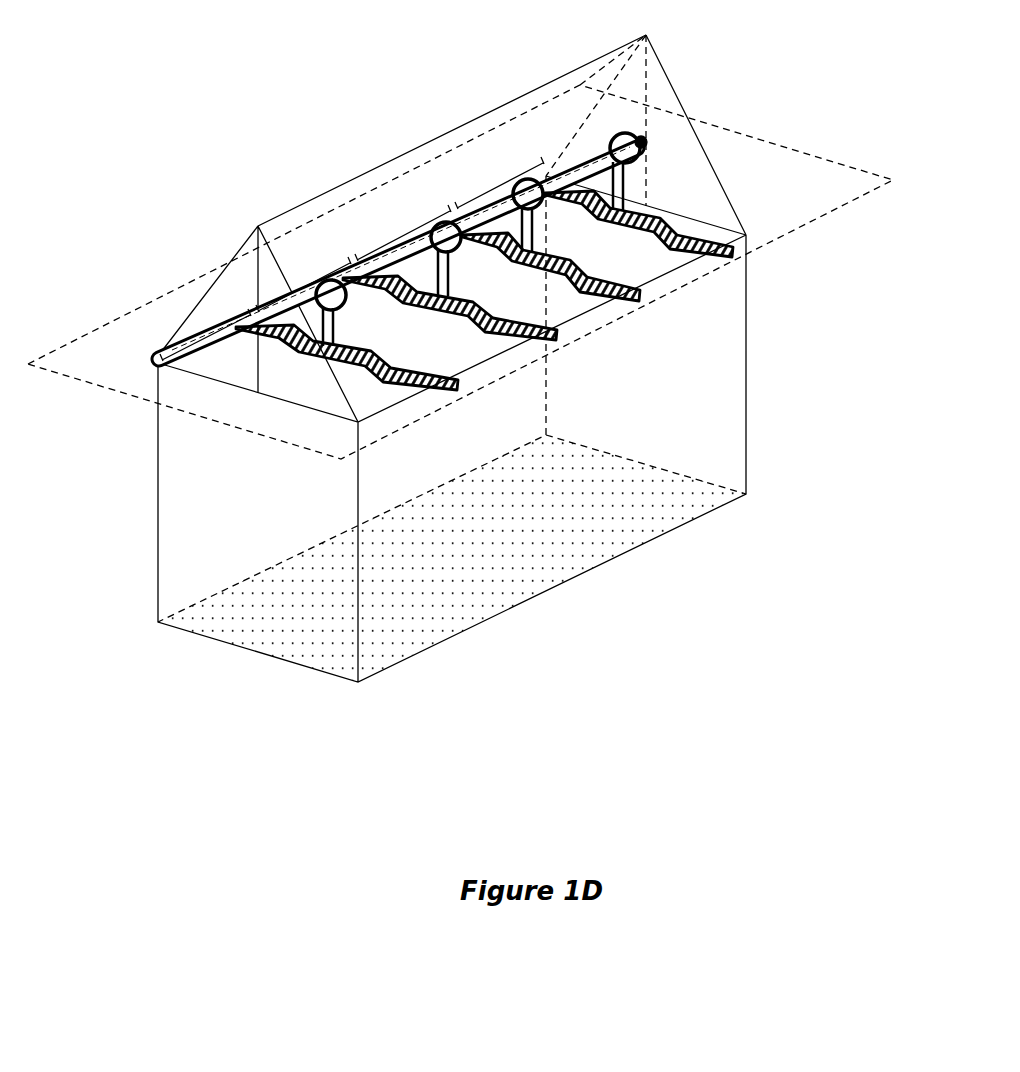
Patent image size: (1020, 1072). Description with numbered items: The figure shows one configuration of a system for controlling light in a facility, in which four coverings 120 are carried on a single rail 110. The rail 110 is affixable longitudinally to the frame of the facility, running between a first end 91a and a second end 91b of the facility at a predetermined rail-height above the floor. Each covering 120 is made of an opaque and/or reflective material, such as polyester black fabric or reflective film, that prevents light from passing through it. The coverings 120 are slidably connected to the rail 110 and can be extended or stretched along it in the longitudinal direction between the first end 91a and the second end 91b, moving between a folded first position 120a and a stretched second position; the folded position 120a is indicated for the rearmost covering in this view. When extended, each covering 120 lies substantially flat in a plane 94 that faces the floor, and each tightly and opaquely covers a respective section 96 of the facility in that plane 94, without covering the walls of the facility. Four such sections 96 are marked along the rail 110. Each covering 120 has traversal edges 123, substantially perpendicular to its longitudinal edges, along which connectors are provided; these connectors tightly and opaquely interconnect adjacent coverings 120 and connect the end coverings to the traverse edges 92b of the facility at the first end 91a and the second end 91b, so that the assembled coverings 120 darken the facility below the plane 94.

The plane 94 is at (88, 334).
The first end 91a is at (687, 90).
The second end 91b is at (243, 279).
The traverse edges 92b is at (193, 373).
The rail 110 is at (600, 150).
The section 96 is at (202, 336).
The traversal edges 123 is at (452, 312).
The covering 120 is at (560, 336).
The first position 120a is at (708, 208).